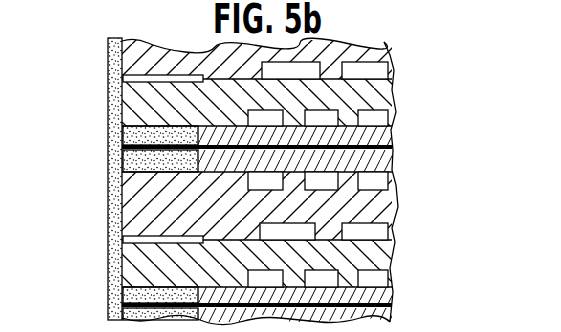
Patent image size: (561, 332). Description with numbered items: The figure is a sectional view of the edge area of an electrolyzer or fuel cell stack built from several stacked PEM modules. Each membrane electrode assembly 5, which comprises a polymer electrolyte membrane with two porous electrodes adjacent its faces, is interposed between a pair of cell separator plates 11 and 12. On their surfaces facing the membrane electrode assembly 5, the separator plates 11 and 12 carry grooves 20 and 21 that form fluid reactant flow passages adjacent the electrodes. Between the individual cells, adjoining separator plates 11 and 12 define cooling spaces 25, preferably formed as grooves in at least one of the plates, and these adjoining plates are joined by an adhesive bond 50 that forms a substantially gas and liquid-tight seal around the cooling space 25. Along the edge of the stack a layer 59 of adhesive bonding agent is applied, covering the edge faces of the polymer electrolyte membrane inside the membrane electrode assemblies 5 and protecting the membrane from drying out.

The membrane electrode assembly 5 is at (402, 130).
The cell separator plate 11 is at (382, 92).
The cell separator plate 12 is at (380, 54).
The groove 20 is at (382, 112).
The groove 21 is at (380, 181).
The cooling space 25 is at (380, 72).
The adhesive bond 50 is at (125, 103).
The layer of adhesive bonding agent 59 is at (116, 234).